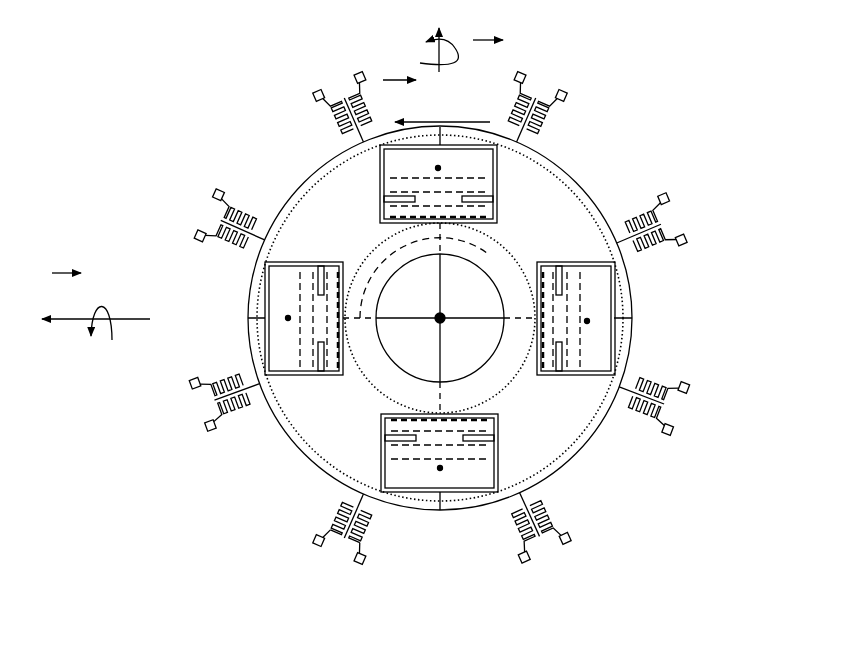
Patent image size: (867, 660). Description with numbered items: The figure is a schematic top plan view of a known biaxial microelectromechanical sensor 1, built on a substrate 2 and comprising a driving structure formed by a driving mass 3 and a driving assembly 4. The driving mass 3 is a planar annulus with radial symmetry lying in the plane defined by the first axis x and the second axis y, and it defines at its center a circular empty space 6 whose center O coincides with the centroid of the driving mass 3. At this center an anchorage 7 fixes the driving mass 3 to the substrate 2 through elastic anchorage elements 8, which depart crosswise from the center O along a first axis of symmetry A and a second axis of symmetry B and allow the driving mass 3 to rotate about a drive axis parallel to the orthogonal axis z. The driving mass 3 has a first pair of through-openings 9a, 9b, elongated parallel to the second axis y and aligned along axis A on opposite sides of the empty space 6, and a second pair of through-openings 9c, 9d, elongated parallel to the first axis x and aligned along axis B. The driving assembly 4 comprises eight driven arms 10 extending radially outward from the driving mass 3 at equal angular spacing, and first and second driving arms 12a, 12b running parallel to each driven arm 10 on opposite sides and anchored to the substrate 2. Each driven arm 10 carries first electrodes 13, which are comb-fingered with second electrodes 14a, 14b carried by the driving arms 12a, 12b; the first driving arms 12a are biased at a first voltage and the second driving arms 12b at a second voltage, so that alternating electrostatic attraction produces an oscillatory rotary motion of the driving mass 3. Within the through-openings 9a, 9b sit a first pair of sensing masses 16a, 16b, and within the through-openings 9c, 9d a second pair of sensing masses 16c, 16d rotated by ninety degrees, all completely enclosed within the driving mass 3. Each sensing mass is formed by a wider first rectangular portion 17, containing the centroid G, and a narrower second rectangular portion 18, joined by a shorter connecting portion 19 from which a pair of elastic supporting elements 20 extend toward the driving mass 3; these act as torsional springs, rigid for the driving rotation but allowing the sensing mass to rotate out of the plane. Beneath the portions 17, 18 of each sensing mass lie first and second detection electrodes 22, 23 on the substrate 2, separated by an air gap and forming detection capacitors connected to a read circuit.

The microelectromechanical sensor 1 is at (696, 147).
The substrate 2 is at (459, 368).
The driving mass 3 is at (305, 182).
The driving assembly 4 is at (288, 548).
The circular empty space 6 is at (491, 333).
The anchorage 7 is at (442, 315).
The elastic anchorage elements 8 is at (437, 273).
The first through-opening 9a is at (274, 359).
The second through-opening 9b is at (599, 359).
The through-opening 9c is at (483, 171).
The through-opening 9d is at (484, 483).
The driven arm 10 is at (364, 499).
The first driving arm 12a is at (367, 535).
The second driving arm 12b is at (332, 522).
The first electrodes 13 is at (338, 560).
The second electrodes 14a is at (358, 567).
The second electrodes 14b is at (330, 540).
The sensing mass 16a is at (309, 260).
The sensing mass 16b is at (577, 260).
The sensing mass 16c is at (396, 165).
The sensing mass 16d is at (405, 480).
The first rectangular portion 17 is at (595, 273).
The second rectangular portion 18 is at (542, 263).
The connecting portion 19 is at (560, 325).
The elastic supporting elements 20 is at (558, 373).
The first detection electrode 22 is at (570, 373).
The second detection electrode 23 is at (545, 375).